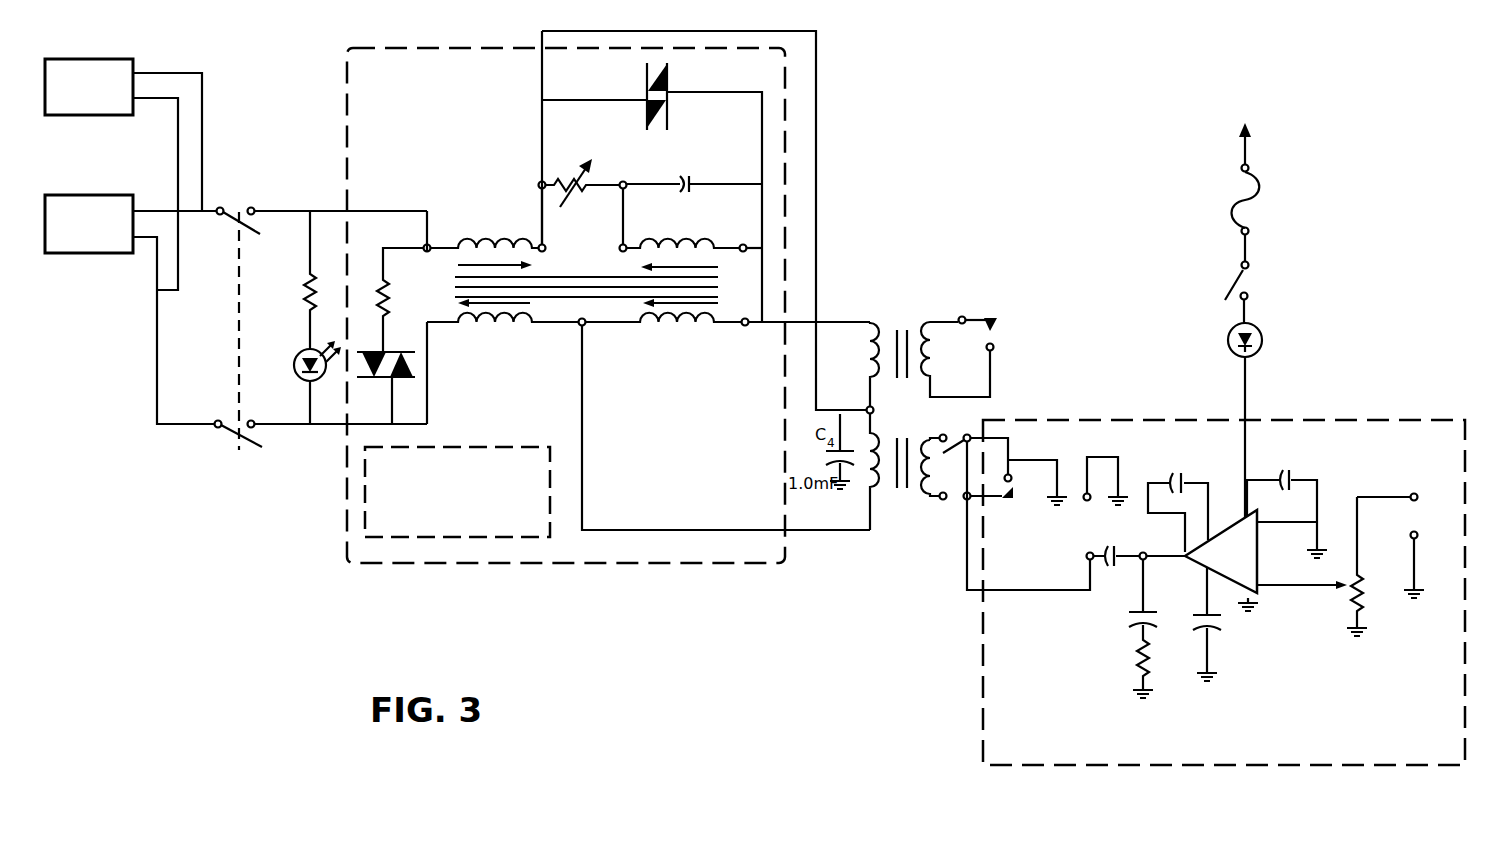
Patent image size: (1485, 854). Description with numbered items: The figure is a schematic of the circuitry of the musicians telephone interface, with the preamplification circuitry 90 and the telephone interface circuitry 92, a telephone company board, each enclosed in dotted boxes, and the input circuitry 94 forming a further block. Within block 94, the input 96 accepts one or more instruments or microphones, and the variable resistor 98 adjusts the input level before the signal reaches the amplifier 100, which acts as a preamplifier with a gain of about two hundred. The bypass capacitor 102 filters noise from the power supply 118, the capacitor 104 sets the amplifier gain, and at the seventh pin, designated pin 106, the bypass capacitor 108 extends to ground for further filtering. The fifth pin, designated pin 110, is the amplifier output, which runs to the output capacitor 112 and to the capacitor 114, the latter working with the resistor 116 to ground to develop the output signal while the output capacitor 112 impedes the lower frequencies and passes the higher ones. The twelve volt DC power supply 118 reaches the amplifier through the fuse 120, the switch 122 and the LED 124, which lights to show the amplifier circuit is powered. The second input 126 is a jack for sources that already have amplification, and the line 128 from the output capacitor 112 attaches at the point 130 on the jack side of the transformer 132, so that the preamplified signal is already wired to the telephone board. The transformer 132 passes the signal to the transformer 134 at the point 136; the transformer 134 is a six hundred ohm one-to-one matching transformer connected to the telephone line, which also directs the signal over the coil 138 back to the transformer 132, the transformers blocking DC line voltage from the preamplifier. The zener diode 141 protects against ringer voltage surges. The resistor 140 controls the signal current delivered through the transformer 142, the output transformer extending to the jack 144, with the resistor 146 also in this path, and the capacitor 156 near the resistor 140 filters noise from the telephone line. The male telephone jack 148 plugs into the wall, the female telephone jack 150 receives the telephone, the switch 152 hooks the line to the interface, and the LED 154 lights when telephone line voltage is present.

The preamplification circuitry 90 is at (155, 341).
The telephone interface circuitry 92 is at (415, 48).
The input circuitry 94 is at (1358, 420).
The input 96 is at (1415, 516).
The variable resistor 98 is at (1366, 597).
The amplifier 100 is at (1245, 567).
The bypass capacitor 102 is at (1288, 464).
The capacitor 104 is at (1170, 471).
The pin 7 106 is at (1206, 579).
The bypass capacitor 108 is at (1219, 628).
The pin 5 110 is at (1172, 553).
The output capacitor 112 is at (1112, 542).
The capacitor 114 is at (1138, 630).
The resistor 116 is at (1137, 671).
The power supply 118 is at (1245, 126).
The fuse 120 is at (1258, 200).
The switch 122 is at (1247, 284).
The LED 124 is at (1266, 343).
The second input 126 is at (1015, 490).
The line 128 is at (1003, 595).
The point 130 is at (962, 501).
The transformer 132 is at (893, 442).
The transformer 134 is at (610, 312).
The point 136 is at (580, 327).
The coil 138 is at (688, 283).
The resistor 140 is at (572, 168).
The zener diode 141 is at (670, 92).
The transformer 142 is at (894, 333).
The jack 144 is at (998, 320).
The resistor 146 is at (396, 299).
The male telephone jack 148 is at (112, 59).
The female telephone jack 150 is at (104, 195).
The switch 152 is at (250, 207).
The LED 154 is at (296, 352).
The capacitor 156 is at (675, 181).